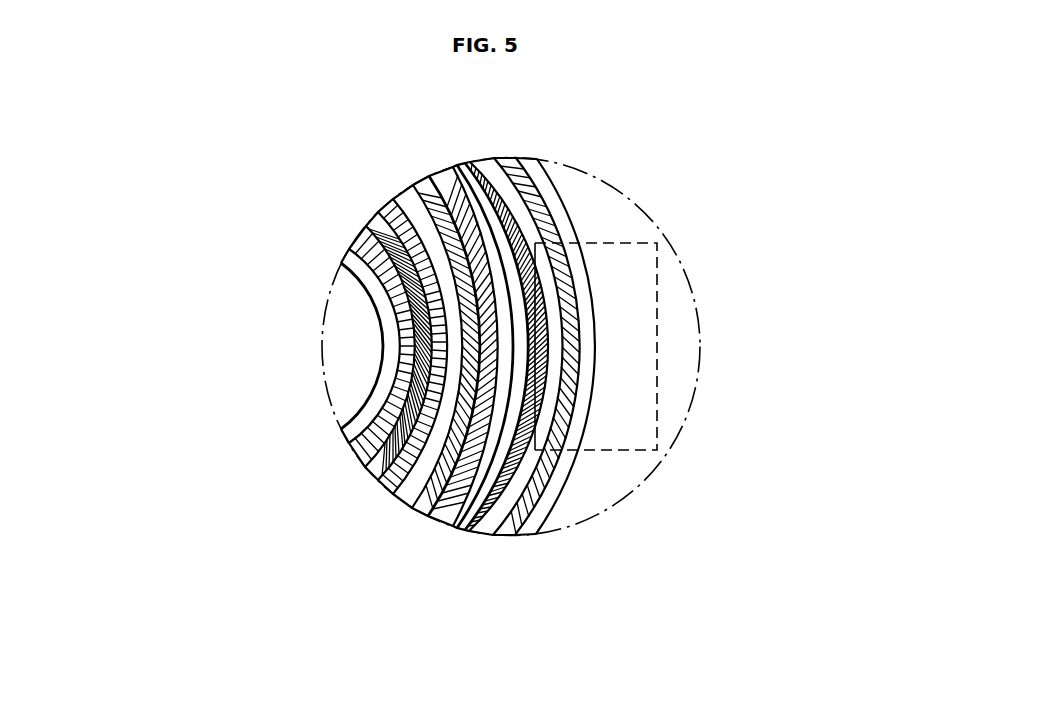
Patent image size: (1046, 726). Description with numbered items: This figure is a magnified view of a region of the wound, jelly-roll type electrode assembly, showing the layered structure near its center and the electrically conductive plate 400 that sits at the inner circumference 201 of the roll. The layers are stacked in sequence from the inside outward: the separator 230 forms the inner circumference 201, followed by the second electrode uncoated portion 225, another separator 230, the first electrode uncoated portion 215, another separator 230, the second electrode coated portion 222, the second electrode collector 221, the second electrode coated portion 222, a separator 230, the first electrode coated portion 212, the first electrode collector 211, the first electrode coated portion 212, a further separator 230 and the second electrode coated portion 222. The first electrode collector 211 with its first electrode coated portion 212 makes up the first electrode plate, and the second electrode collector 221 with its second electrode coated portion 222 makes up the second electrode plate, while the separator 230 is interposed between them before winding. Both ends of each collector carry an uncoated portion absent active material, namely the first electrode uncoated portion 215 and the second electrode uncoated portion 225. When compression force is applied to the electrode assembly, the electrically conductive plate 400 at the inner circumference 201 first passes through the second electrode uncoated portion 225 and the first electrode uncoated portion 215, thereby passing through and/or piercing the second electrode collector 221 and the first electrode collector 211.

The inner circumference 201 is at (571, 185).
The electrically conductive plate 400 is at (664, 241).
The first electrode collector 211 is at (368, 230).
The first electrode coated portion 212 is at (348, 256).
The first electrode uncoated portion 215 is at (463, 524).
The second electrode collector 221 is at (416, 190).
The second electrode coated portion 222 is at (437, 175).
The second electrode uncoated portion 225 is at (517, 529).
The separator 230 is at (453, 163).